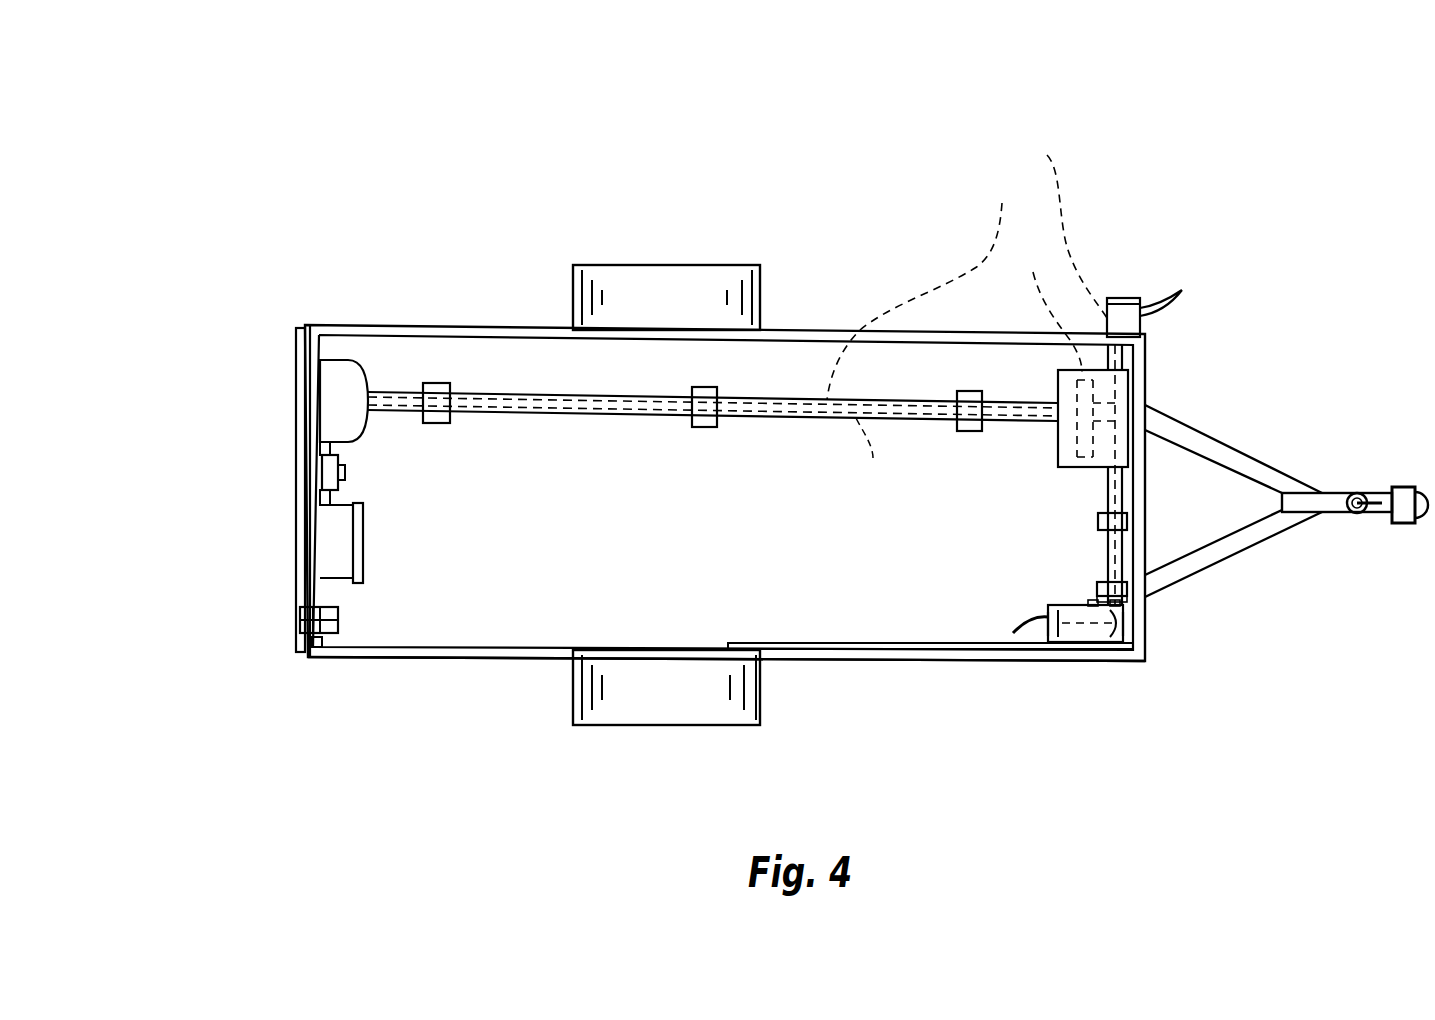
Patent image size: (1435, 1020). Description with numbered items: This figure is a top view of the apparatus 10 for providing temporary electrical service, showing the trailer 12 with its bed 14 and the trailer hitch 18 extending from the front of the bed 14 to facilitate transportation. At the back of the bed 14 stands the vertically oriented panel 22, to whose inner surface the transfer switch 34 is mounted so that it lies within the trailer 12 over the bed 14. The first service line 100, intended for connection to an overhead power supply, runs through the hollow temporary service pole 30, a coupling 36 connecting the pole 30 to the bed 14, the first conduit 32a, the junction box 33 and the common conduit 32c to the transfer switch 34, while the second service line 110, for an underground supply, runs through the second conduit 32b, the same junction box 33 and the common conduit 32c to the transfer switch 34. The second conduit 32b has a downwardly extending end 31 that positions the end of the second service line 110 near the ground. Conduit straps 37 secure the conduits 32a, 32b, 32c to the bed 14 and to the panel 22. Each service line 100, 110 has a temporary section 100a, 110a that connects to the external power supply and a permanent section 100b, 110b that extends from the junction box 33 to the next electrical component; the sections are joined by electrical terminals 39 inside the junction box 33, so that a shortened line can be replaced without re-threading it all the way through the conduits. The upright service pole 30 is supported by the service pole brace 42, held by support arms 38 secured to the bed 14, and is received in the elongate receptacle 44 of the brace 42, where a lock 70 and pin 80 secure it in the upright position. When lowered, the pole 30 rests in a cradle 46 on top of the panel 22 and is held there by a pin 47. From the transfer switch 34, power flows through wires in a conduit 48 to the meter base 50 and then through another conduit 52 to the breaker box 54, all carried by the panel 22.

The apparatus 10 is at (188, 155).
The trailer 12 is at (1016, 674).
The bed 14 is at (480, 615).
The trailer hitch 18 is at (1382, 515).
The panel 22 is at (313, 388).
The service pole 30 is at (1113, 650).
The end of second conduit 31 is at (1130, 303).
The first conduit 32a is at (1150, 565).
The second conduit 32b is at (1135, 360).
The common conduit 32c is at (908, 400).
The junction box 33 is at (1105, 430).
The transfer switch 34 is at (345, 380).
The coupling 36 is at (1135, 592).
The conduit straps 37 is at (450, 398).
The support arms 38 is at (855, 648).
The electrical terminals 39 is at (1049, 309).
The service pole brace 42 is at (1130, 618).
The elongate receptacle 44 is at (1133, 627).
The cradle 46 is at (312, 628).
The pin 47 is at (315, 610).
The conduit 48 is at (320, 445).
The meter base 50 is at (328, 473).
The conduit 52 is at (320, 498).
The breaker box 54 is at (335, 548).
The lock 70 is at (1060, 594).
The pin 80 is at (1080, 648).
The first service line 100 is at (943, 482).
The temporary section 100a is at (1097, 546).
The permanent section 100b is at (869, 453).
The second service line 110 is at (967, 262).
The temporary section 110a is at (1042, 226).
The permanent section 110b is at (934, 289).